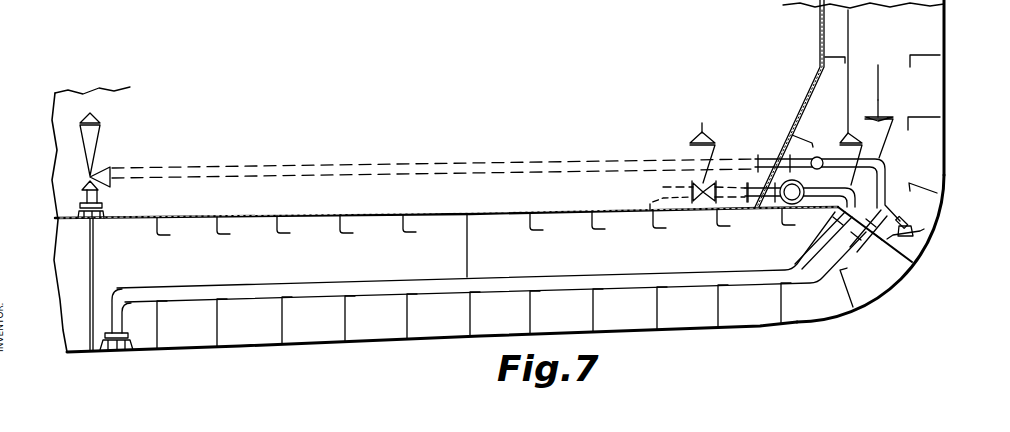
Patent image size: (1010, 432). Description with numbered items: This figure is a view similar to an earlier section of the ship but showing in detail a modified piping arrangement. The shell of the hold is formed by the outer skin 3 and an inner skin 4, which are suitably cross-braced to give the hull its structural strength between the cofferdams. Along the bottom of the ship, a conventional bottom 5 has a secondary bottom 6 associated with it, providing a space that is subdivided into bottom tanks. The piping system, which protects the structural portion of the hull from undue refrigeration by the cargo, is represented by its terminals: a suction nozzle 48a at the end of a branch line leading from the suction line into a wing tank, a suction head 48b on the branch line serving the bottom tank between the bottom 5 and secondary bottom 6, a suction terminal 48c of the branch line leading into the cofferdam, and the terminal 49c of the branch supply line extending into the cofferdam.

The outer skin 3 is at (943, 44).
The inner skin 4 is at (820, 33).
The bottom 5 is at (708, 329).
The secondary bottom 6 is at (567, 215).
The suction nozzle 48a is at (928, 234).
The suction head 48b is at (126, 352).
The suction terminal 48c is at (108, 216).
The branch supply line terminal 49c is at (650, 189).